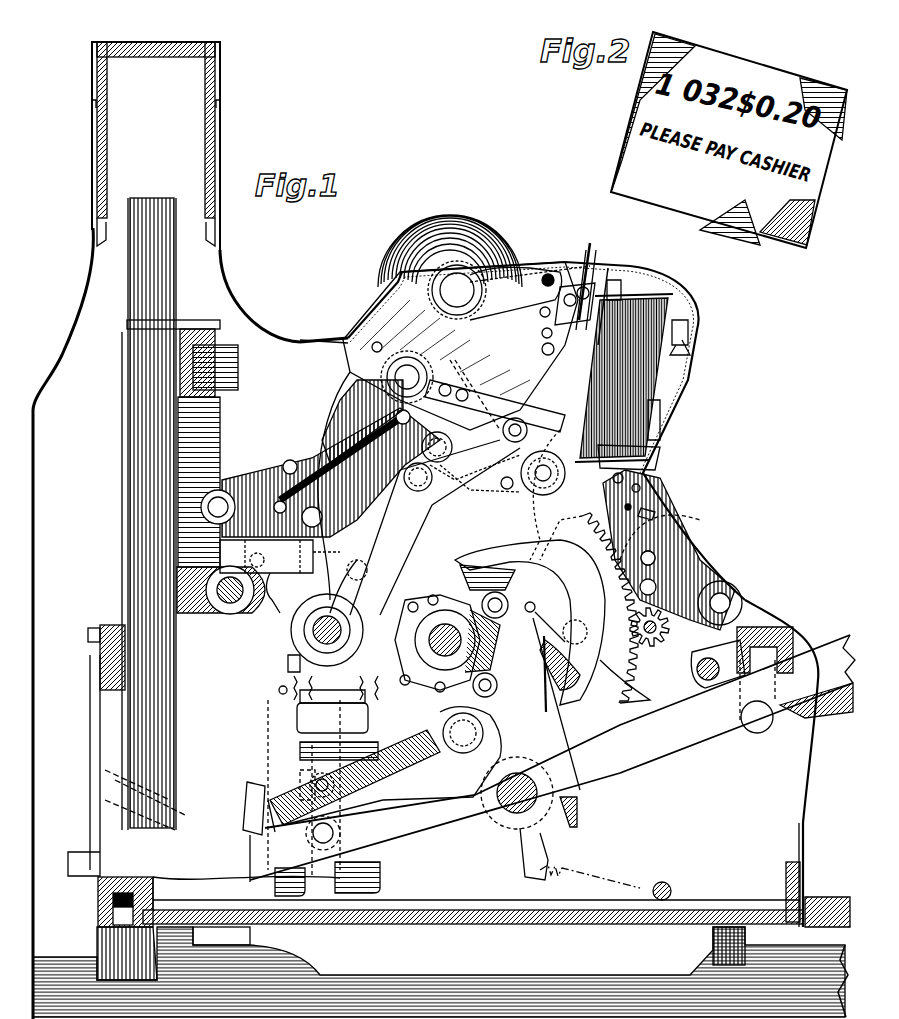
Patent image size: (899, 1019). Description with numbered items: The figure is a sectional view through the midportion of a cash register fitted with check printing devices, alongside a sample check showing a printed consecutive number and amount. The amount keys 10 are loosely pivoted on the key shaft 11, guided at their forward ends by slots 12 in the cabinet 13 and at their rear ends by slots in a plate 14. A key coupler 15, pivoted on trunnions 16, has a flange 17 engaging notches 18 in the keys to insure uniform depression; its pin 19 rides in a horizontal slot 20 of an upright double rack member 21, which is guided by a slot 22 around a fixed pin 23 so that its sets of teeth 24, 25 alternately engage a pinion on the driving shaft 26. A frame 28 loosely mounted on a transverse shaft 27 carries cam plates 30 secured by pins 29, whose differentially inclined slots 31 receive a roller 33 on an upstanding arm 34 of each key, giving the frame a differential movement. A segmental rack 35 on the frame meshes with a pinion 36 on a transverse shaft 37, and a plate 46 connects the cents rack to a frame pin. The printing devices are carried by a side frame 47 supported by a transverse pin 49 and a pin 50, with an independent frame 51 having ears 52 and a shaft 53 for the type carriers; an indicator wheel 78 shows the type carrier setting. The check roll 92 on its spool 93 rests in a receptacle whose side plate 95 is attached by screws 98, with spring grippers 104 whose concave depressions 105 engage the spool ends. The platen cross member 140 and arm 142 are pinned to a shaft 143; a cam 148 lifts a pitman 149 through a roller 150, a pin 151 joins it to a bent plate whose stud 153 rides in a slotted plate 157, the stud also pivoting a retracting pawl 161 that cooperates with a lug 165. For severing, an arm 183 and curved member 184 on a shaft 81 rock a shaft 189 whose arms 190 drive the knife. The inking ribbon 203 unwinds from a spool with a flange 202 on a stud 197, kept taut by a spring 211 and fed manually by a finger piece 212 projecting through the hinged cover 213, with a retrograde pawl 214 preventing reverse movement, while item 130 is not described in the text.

The amount keys 10 is at (552, 758).
The key shaft 11 is at (497, 800).
The slots 12 is at (800, 760).
The cabinet 13 is at (656, 516).
The plate 14 is at (104, 812).
The key coupler 15 is at (386, 780).
The trunnions 16 is at (485, 733).
The flange 17 is at (302, 782).
The notches 18 is at (256, 795).
The pin 19 is at (318, 775).
The horizontal slot 20 is at (339, 803).
The double rack member 21 is at (328, 725).
The slot 22 is at (336, 875).
The fixed pin 23 is at (340, 833).
The set of teeth 24 is at (336, 689).
The set of teeth 25 is at (332, 705).
The driving shaft 26 is at (288, 662).
The transverse shaft 27 is at (447, 646).
The frame 28 is at (540, 655).
The pins 29 is at (503, 598).
The cam plates 30 is at (572, 620).
The differentially inclined slots 31 is at (565, 630).
The roller 33 is at (535, 604).
The upstanding arm 34 is at (543, 640).
The segmental rack 35 is at (697, 665).
The pinion 36 is at (656, 632).
The transverse shaft 37 is at (668, 632).
The plate 46 is at (492, 572).
The side frame 47 is at (690, 570).
The transverse pin 49 is at (222, 500).
The pin 50 is at (724, 598).
The frame 51 is at (641, 489).
The ears 52 is at (632, 507).
The shaft 53 is at (624, 478).
The indicator wheel 78 is at (690, 545).
The shaft 81 is at (370, 500).
The check roll 92 is at (500, 250).
The spool 93 is at (365, 340).
The side plate 95 is at (448, 431).
The screws 98 is at (540, 316).
The spring grippers 104 is at (495, 290).
The concave depressions 105 is at (482, 278).
The pin 130 is at (278, 690).
The cross member 140 is at (655, 450).
The arm 142 is at (495, 406).
The shaft 143 is at (387, 380).
The cam 148 is at (291, 640).
The pitman 149 is at (420, 545).
The roller 150 is at (360, 563).
The pin 151 is at (414, 490).
The stud 153 is at (437, 435).
The plate 157 is at (497, 473).
The retracting pawl 161 is at (503, 436).
The lug 165 is at (468, 384).
The arm 183 is at (283, 556).
The curved member 184 is at (265, 615).
The shaft 189 is at (541, 336).
The arms 190 is at (541, 352).
The stud 197 is at (690, 330).
The flange 202 is at (628, 288).
The inking ribbon 203 is at (662, 400).
The spring 211 is at (568, 285).
The finger piece 212 is at (592, 252).
The hinged cover 213 is at (660, 420).
The retrograde pawl 214 is at (600, 280).